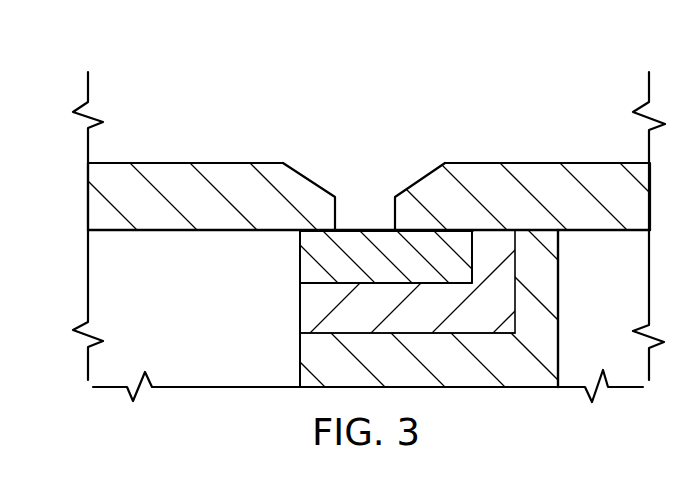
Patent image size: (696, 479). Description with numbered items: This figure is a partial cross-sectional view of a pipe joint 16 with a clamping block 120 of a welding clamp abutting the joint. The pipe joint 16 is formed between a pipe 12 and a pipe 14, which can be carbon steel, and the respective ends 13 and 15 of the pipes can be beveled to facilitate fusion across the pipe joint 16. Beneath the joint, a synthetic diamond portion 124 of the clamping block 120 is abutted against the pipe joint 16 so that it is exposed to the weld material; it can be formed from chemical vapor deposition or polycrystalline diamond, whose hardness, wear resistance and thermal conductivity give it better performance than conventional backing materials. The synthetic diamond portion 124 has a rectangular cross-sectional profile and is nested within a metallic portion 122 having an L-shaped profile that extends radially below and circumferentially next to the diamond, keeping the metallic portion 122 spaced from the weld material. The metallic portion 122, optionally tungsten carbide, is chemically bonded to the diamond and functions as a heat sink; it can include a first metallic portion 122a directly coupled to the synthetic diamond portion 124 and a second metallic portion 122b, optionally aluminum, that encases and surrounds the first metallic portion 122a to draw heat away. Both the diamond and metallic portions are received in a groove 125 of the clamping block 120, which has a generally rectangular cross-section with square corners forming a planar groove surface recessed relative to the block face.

The pipe 12 is at (478, 170).
The end of pipe 13 is at (418, 172).
The pipe 14 is at (224, 168).
The end of pipe 15 is at (313, 172).
The pipe joint 16 is at (534, 56).
The clamping block 120 is at (590, 350).
The metallic portion 122 is at (563, 289).
The first metallic portion 122a is at (308, 318).
The second metallic portion 122b is at (308, 350).
The synthetic diamond portion 124 is at (308, 270).
The groove 125 is at (308, 294).